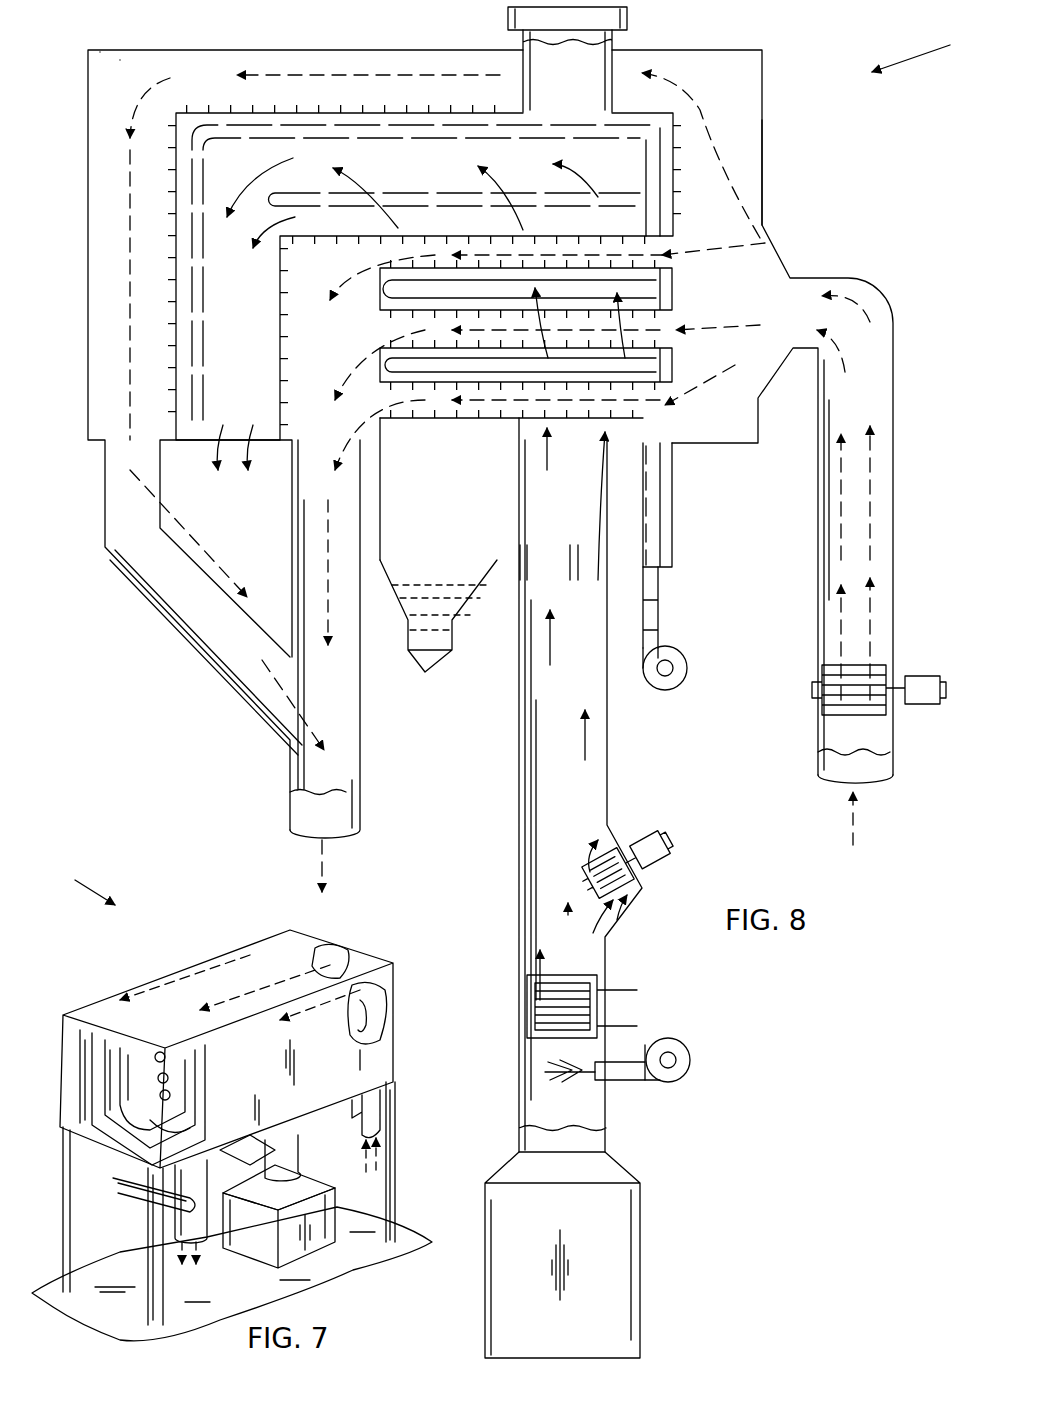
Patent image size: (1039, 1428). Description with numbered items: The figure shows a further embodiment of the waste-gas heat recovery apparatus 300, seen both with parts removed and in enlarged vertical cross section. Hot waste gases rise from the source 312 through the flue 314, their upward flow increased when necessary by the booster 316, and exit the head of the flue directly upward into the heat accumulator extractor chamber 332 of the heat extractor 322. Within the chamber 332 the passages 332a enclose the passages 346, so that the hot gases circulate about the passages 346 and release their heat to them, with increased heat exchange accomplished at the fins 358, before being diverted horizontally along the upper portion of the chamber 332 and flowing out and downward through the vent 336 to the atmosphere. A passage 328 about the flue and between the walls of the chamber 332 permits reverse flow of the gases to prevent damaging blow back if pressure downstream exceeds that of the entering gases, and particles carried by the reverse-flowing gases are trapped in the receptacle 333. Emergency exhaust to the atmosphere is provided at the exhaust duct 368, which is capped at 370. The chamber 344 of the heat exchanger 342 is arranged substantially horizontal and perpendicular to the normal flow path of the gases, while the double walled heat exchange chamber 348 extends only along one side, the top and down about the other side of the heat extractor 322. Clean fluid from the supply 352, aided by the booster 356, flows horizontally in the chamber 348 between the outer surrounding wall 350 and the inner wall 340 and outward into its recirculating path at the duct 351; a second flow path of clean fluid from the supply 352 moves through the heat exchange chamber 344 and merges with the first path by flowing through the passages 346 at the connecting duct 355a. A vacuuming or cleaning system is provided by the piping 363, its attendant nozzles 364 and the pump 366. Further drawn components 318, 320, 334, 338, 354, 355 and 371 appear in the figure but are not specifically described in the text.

In FIG. 8, the apparatus 300 is at (911, 42).
In FIG. 7, the apparatus 300 is at (80, 877).
In FIG. 8, the source 312 is at (642, 1232).
In FIG. 7, the source 312 is at (318, 1250).
In FIG. 8, the flue 314 is at (607, 732).
In FIG. 7, the flue 314 is at (300, 1160).
In FIG. 8, the booster 316 is at (636, 890).
In FIG. 8, the burner blower 318 is at (690, 1055).
In FIG. 8, the heat exchanger section 320 is at (600, 984).
In FIG. 8, the heat extractor 322 is at (677, 150).
In FIG. 8, the passage 328 is at (497, 562).
In FIG. 8, the heat accumulator extractor chamber 332 is at (672, 486).
In FIG. 8, the passages 332a is at (555, 140).
In FIG. 8, the receptacle 333 is at (452, 642).
In FIG. 7, the receptacle 333 is at (262, 1140).
In FIG. 8, the gas flow paths 334 is at (552, 168).
In FIG. 8, the vent 336 is at (234, 470).
In FIG. 7, the vent 336 is at (195, 1128).
In FIG. 8, the outer flow passage 338 is at (192, 440).
In FIG. 7, the outer flow passage 338 is at (100, 1020).
In FIG. 8, the inner wall 340 is at (338, 112).
In FIG. 7, the inner wall 340 is at (205, 970).
In FIG. 8, the heat exchanger 342 is at (765, 156).
In FIG. 7, the heat exchanger 342 is at (340, 960).
In FIG. 8, the chamber 344 is at (763, 86).
In FIG. 7, the chamber 344 is at (388, 985).
In FIG. 8, the passages 346 is at (660, 256).
In FIG. 7, the passages 346 is at (170, 1080).
In FIG. 8, the double walled heat exchange chamber 348 is at (310, 60).
In FIG. 7, the double walled heat exchange chamber 348 is at (150, 995).
In FIG. 8, the outer surrounding wall 350 is at (182, 50).
In FIG. 7, the outer surrounding wall 350 is at (288, 932).
In FIG. 8, the duct 351 is at (360, 812).
In FIG. 7, the duct 351 is at (208, 1250).
In FIG. 8, the supply 352 is at (818, 766).
In FIG. 7, the supply 352 is at (382, 1112).
In FIG. 8, the air inlet duct 354 is at (890, 322).
In FIG. 7, the air inlet duct 354 is at (380, 1035).
In FIG. 8, the discharge duct 355 is at (88, 390).
In FIG. 7, the discharge duct 355 is at (135, 1213).
In FIG. 8, the connecting duct 355a is at (292, 548).
In FIG. 7, the connecting duct 355a is at (279, 1211).
In FIG. 8, the booster 356 is at (822, 718).
In FIG. 8, the fins 358 is at (405, 420).
In FIG. 8, the piping 363 is at (660, 590).
In FIG. 8, the nozzles 364 is at (208, 310).
In FIG. 8, the pump 366 is at (688, 664).
In FIG. 8, the exhaust duct 368 is at (615, 40).
In FIG. 8, the cap 370 is at (506, 16).
In FIG. 8, the deflector plates 371 is at (612, 551).